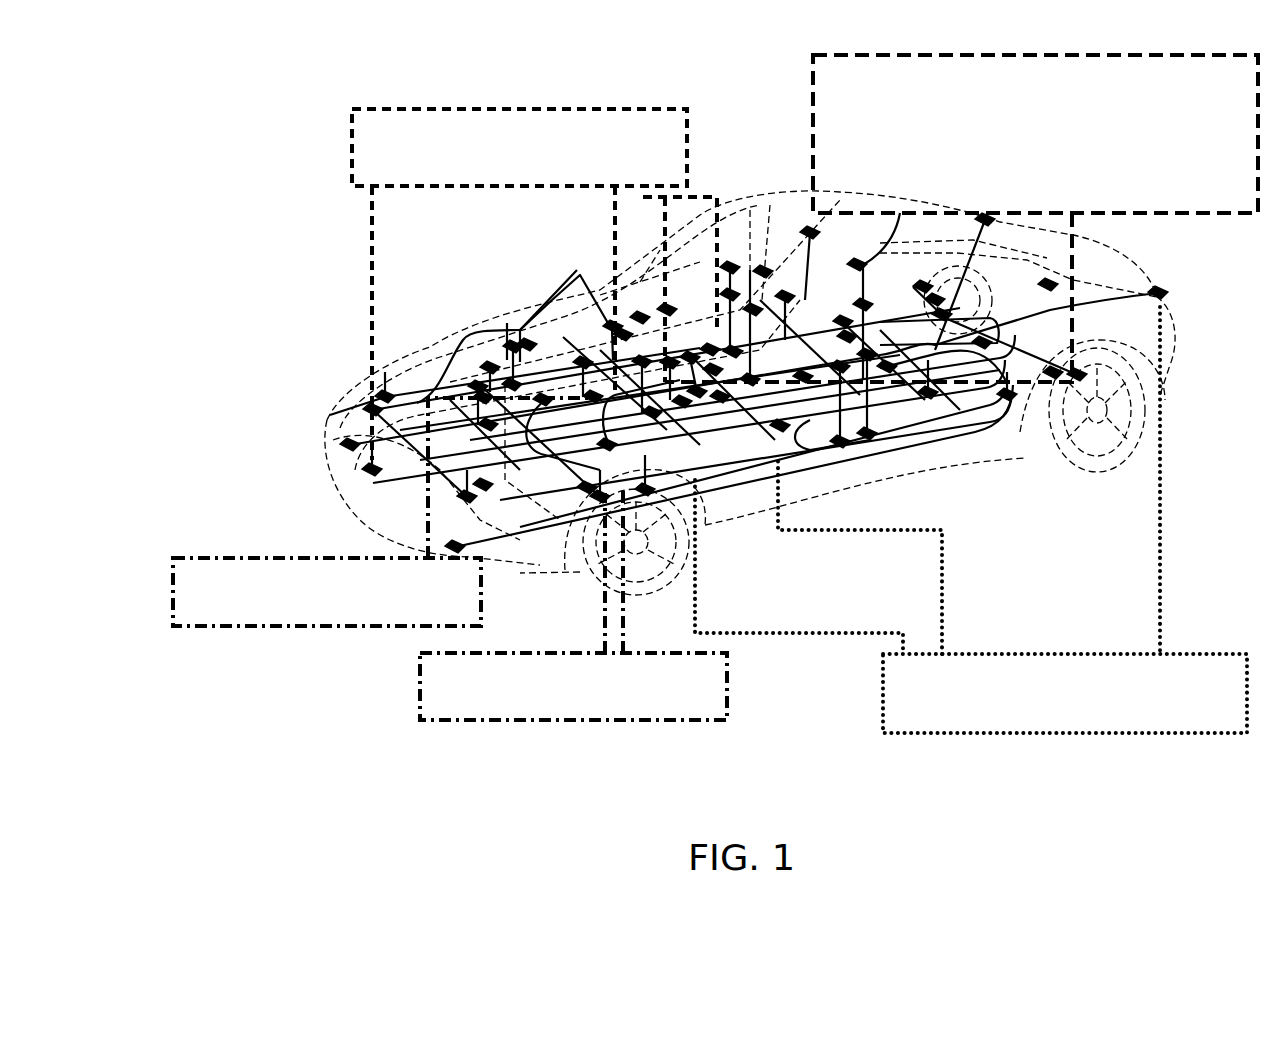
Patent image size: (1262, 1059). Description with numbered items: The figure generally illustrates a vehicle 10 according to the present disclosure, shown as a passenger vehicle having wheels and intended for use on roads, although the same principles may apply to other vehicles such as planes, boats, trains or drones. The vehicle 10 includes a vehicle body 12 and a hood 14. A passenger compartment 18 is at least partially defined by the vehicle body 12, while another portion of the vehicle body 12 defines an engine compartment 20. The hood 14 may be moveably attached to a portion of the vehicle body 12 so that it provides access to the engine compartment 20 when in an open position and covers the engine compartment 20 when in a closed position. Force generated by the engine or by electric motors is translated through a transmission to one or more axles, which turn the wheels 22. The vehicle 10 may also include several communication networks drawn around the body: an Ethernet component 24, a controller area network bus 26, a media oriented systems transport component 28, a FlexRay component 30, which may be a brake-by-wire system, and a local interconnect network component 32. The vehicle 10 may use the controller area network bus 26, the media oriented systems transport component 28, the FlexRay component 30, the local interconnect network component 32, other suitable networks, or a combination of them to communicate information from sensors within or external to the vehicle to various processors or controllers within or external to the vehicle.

The vehicle 10 is at (140, 195).
The vehicle body 12 is at (835, 373).
The hood 14 is at (462, 334).
The passenger compartment 18 is at (628, 281).
The engine compartment 20 is at (305, 403).
The wheels 22 is at (580, 556).
The Ethernet component 24 is at (148, 594).
The controller area network (CAN) bus 26 is at (325, 147).
The media oriented systems transport component (MOST) 28 is at (785, 118).
The FlexRay component 30 is at (385, 688).
The local interconnect network component (LIN) 32 is at (855, 688).